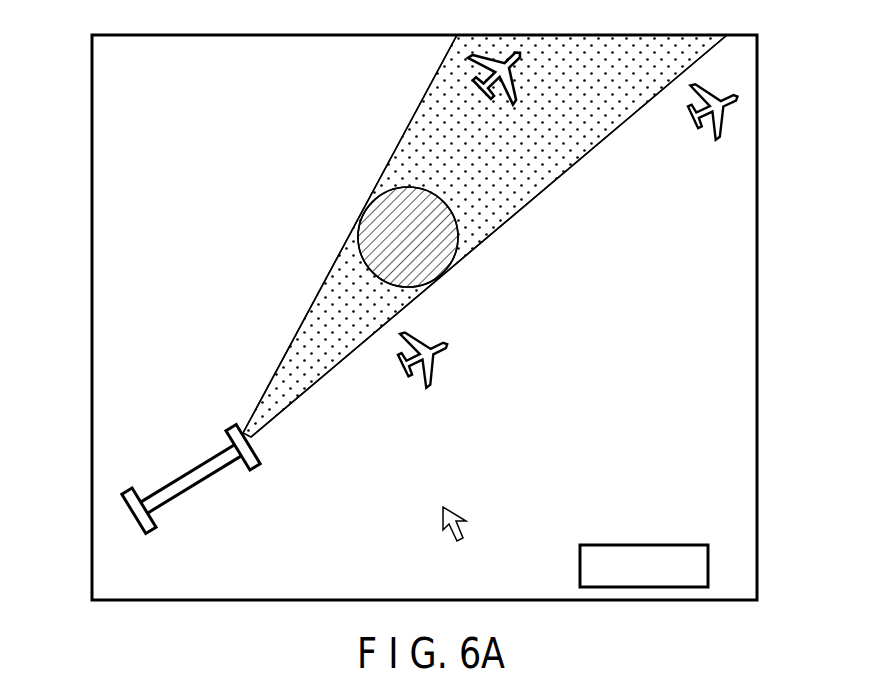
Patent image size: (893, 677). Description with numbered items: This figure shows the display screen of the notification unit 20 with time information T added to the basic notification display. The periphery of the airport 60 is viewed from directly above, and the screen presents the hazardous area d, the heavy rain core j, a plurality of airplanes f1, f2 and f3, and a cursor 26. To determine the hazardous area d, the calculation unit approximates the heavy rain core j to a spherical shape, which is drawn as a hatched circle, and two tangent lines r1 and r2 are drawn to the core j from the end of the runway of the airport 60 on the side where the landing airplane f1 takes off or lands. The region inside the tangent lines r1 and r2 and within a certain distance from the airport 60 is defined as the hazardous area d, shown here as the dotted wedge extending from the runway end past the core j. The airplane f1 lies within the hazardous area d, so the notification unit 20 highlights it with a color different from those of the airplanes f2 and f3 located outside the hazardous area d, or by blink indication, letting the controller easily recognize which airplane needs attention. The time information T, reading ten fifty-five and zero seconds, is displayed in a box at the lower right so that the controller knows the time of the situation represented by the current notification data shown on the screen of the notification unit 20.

The notification unit 20 is at (92, 125).
The airport 60 is at (218, 473).
The cursor 26 is at (452, 516).
The hazardous area d is at (440, 115).
The core j is at (378, 213).
The tangent line r1 is at (306, 318).
The tangent line r2 is at (560, 178).
The airplane f1 is at (520, 46).
The airplane f2 is at (458, 347).
The airplane f3 is at (713, 133).
The time information T is at (644, 545).